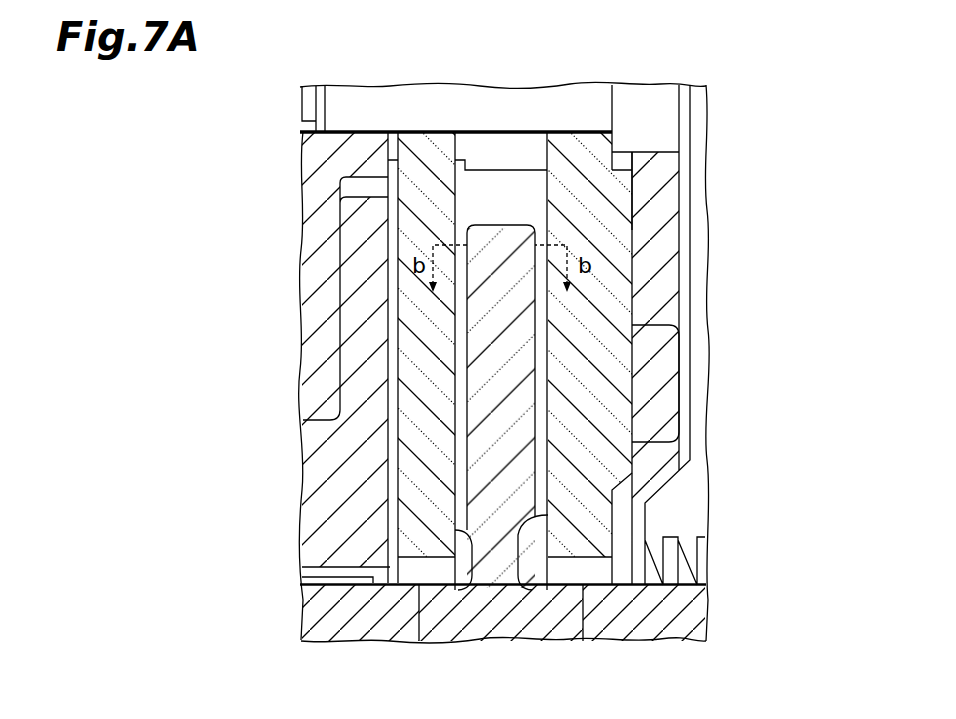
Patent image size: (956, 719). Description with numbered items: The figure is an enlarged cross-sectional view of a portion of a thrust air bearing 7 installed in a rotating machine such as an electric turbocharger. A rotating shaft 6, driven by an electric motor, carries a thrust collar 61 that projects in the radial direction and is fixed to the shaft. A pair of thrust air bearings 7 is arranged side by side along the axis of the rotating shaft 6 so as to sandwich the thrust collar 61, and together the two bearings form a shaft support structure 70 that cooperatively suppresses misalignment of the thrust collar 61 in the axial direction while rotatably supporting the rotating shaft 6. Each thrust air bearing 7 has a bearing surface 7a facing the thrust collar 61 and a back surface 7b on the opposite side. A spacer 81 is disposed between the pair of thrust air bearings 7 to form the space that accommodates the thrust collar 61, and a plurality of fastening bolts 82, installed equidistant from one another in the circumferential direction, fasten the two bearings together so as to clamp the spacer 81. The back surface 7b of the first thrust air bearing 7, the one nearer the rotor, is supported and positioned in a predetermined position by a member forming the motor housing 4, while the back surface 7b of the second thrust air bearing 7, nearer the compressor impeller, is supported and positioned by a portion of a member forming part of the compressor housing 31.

The motor housing 4 is at (313, 205).
The rotating shaft 6 is at (347, 641).
The thrust air bearing 7 is at (423, 177).
The bearing surface 7a is at (473, 532).
The back surface 7b is at (390, 457).
The compressor housing 31 is at (653, 223).
The thrust collar 61 is at (493, 222).
The shaft support structure 70 is at (638, 189).
The spacer 81 is at (654, 115).
The fastening bolt 82 is at (527, 150).